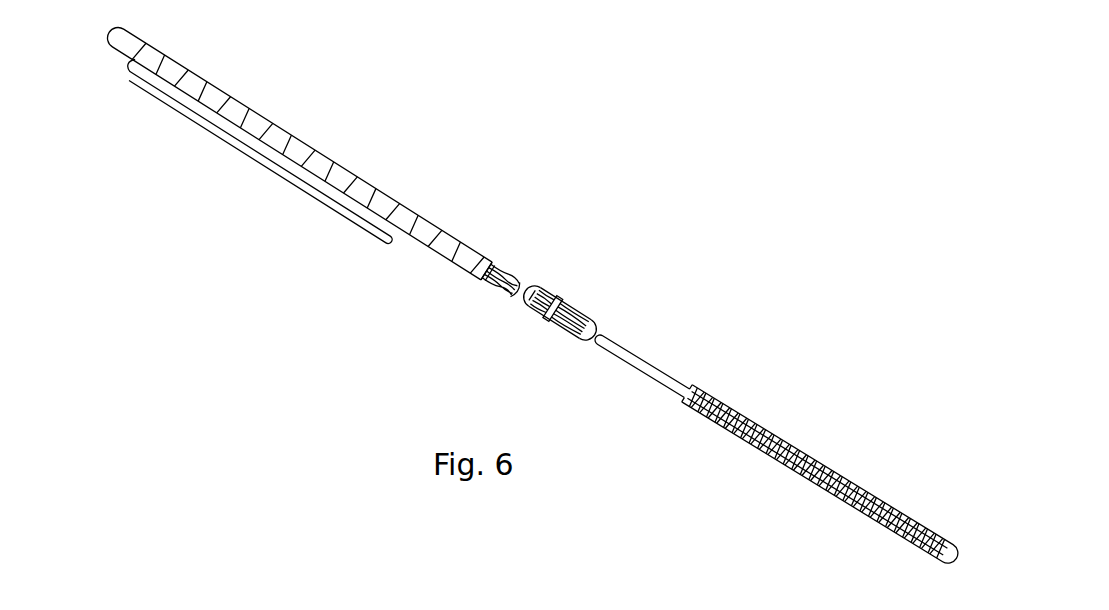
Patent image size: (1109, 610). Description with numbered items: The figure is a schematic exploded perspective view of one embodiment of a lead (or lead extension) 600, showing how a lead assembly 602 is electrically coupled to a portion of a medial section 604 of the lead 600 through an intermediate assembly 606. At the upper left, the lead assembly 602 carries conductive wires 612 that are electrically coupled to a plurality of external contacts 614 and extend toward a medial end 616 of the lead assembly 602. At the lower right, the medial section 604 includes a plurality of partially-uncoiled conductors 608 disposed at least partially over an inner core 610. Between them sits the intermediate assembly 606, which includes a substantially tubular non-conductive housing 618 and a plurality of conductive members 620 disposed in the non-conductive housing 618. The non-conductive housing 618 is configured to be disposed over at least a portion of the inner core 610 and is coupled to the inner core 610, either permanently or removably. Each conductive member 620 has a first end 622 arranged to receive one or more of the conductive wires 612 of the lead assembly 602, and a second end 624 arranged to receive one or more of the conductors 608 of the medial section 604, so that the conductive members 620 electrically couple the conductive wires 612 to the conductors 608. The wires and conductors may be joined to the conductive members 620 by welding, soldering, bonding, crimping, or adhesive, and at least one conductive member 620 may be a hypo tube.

The lead 600 is at (736, 238).
The lead assembly 602 is at (339, 150).
The medial section 604 is at (797, 414).
The intermediate assembly 606 is at (544, 330).
The partially-uncoiled conductors 608 is at (845, 463).
The inner core 610 is at (646, 357).
The conductive wires 612 is at (509, 251).
The external contacts 614 is at (261, 151).
The medial end 616 is at (496, 236).
The non-conductive housing 618 is at (552, 331).
The conductive members 620 is at (527, 322).
The first end 622 is at (543, 282).
The second end 624 is at (596, 310).